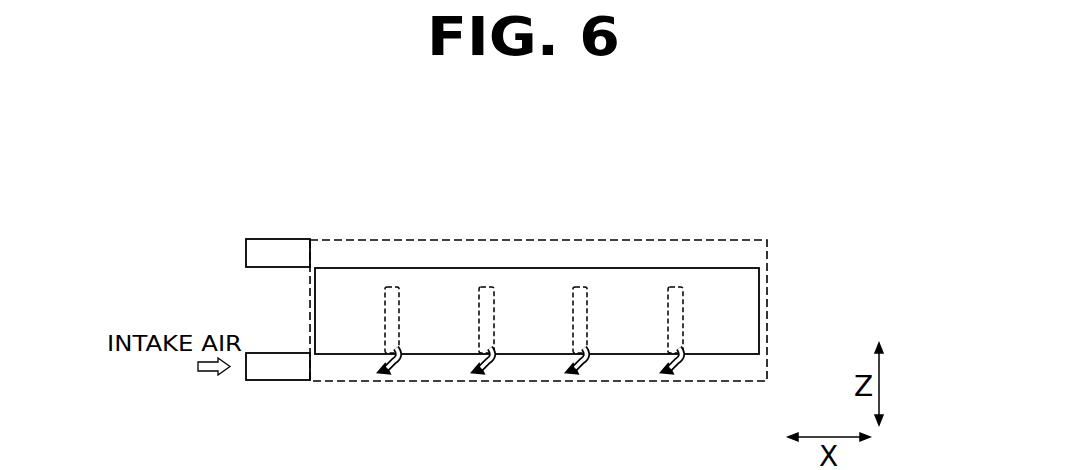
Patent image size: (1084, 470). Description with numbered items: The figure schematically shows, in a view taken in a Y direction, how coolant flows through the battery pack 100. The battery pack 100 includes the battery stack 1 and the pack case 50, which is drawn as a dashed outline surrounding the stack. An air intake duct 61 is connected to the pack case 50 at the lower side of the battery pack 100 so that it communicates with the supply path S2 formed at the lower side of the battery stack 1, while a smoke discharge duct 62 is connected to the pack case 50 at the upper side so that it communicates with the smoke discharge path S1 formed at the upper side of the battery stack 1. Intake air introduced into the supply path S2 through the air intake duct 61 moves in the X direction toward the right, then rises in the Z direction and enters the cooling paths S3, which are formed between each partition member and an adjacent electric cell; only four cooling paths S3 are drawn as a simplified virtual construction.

The battery pack 100 is at (540, 236).
The battery stack 1 is at (358, 265).
The smoke discharge path S1 is at (437, 258).
The supply path S2 is at (435, 363).
The cooling path S3 is at (400, 318).
The smoke discharge duct 62 is at (272, 249).
The air intake duct 61 is at (272, 370).
The pack case 50 is at (538, 384).